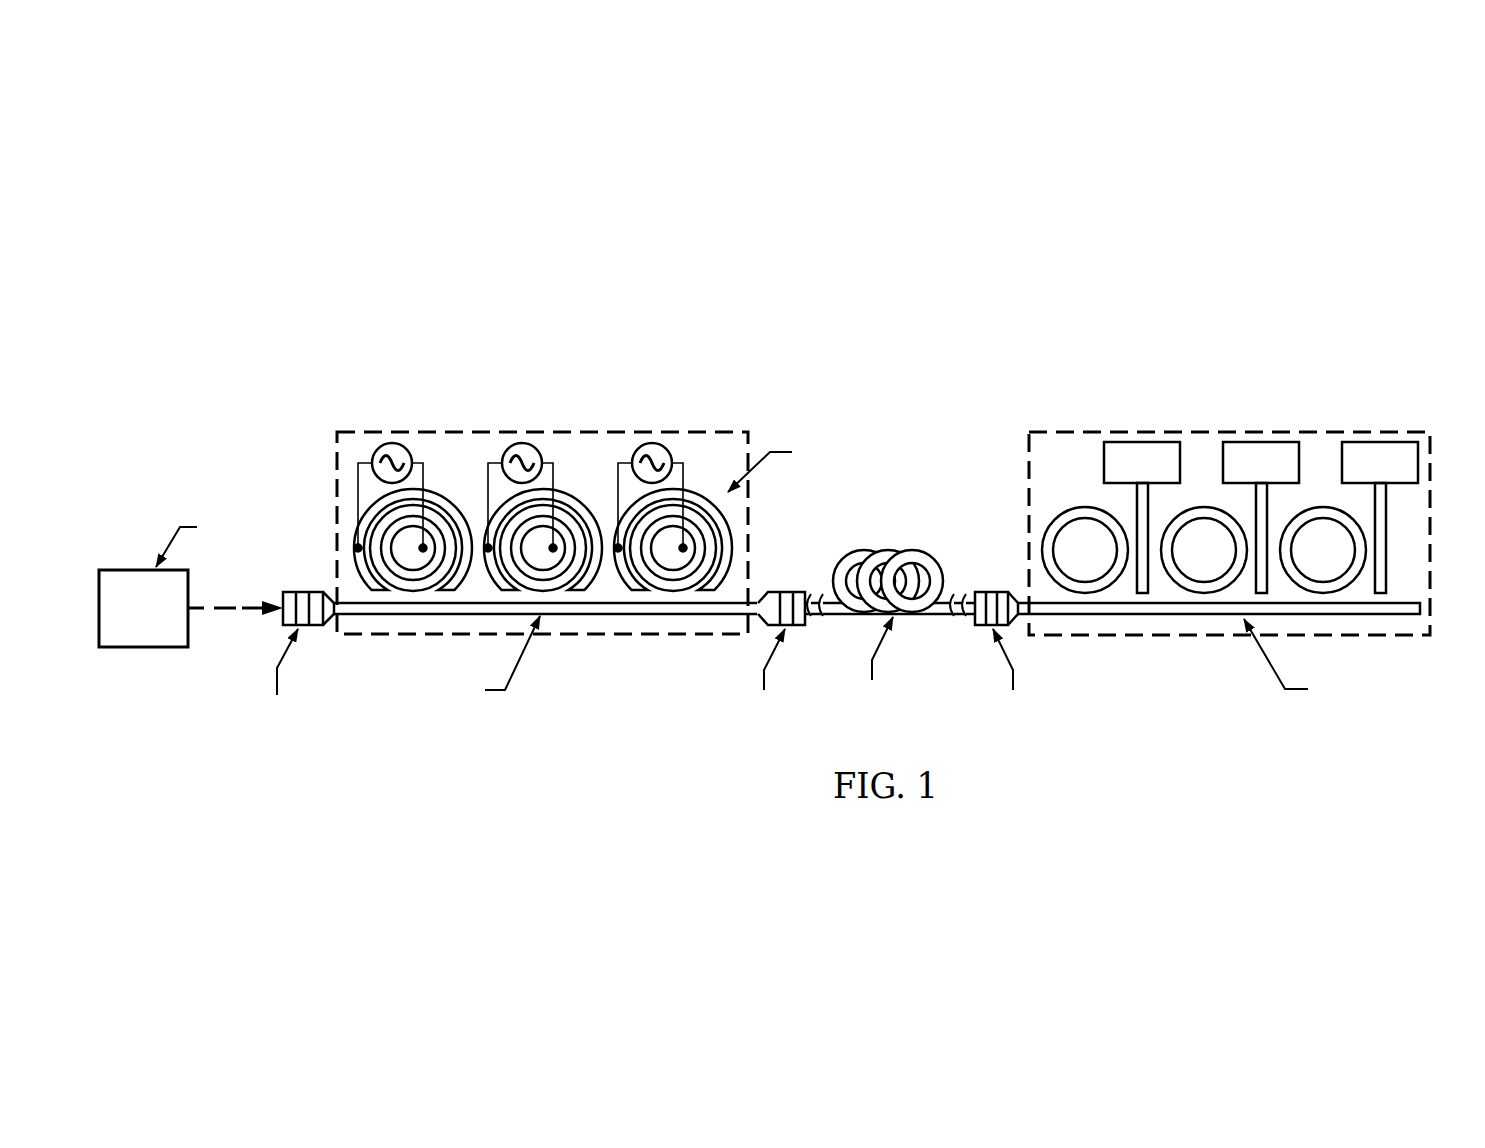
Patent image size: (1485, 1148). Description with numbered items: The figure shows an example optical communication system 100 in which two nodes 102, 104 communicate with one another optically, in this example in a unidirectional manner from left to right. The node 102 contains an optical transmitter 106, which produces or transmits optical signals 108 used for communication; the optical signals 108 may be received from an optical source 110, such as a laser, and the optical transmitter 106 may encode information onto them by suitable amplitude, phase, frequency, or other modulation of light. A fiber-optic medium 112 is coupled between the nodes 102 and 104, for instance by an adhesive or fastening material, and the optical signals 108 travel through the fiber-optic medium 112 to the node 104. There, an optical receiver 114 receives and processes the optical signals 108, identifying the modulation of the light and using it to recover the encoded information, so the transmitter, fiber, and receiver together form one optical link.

The optical communication system 100 is at (1040, 263).
The node 102 is at (445, 352).
The node 104 is at (1290, 329).
The optical transmitter 106 is at (428, 427).
The optical signals 108 is at (220, 617).
The optical source 110 is at (142, 650).
The fiber-optic medium 112 is at (930, 618).
The optical receiver 114 is at (1348, 427).